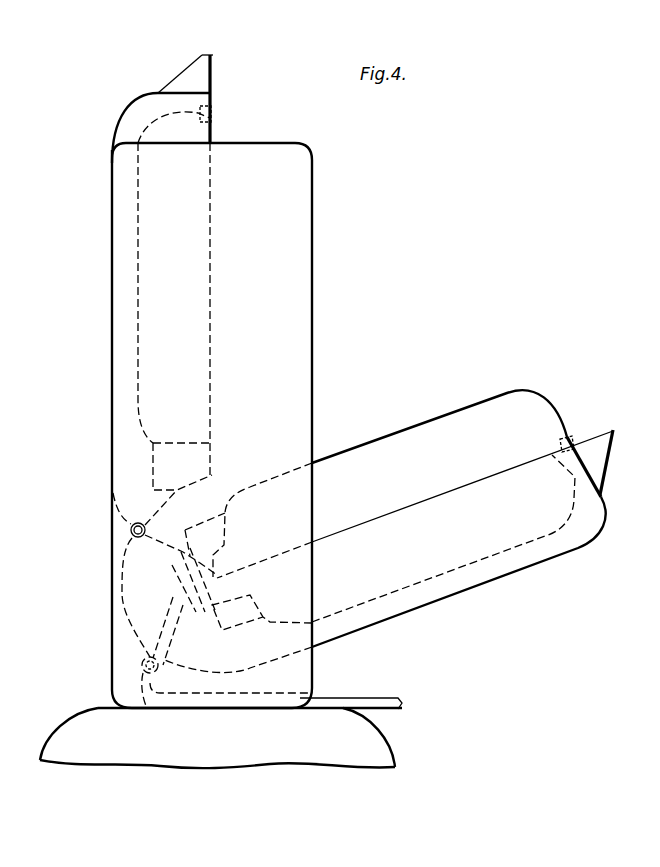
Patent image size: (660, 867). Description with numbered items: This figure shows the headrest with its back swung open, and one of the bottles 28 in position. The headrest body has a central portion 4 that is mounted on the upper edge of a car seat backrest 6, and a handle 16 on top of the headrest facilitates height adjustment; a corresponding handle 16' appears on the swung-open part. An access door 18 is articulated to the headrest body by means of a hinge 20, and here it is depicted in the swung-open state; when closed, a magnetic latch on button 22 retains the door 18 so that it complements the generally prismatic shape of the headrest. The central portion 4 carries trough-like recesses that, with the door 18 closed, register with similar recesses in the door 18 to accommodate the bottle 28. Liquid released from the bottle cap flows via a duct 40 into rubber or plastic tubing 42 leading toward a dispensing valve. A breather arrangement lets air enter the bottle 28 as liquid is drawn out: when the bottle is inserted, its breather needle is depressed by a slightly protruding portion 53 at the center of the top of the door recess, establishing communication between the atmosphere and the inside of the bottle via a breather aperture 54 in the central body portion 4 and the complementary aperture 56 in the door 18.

The central portion 4 is at (118, 128).
The handle 16 is at (171, 65).
The breather aperture 54 is at (214, 112).
The magnetic latch button 22 is at (196, 122).
The car seat backrest 6 is at (98, 717).
The tubing 42 is at (385, 700).
The bottle 28 is at (496, 405).
The access door 18 is at (533, 555).
The handle 16' is at (602, 467).
The complementary aperture 56 is at (567, 437).
The protruding portion 53 is at (562, 473).
The hinge 20 is at (132, 529).
The duct 40 is at (112, 593).